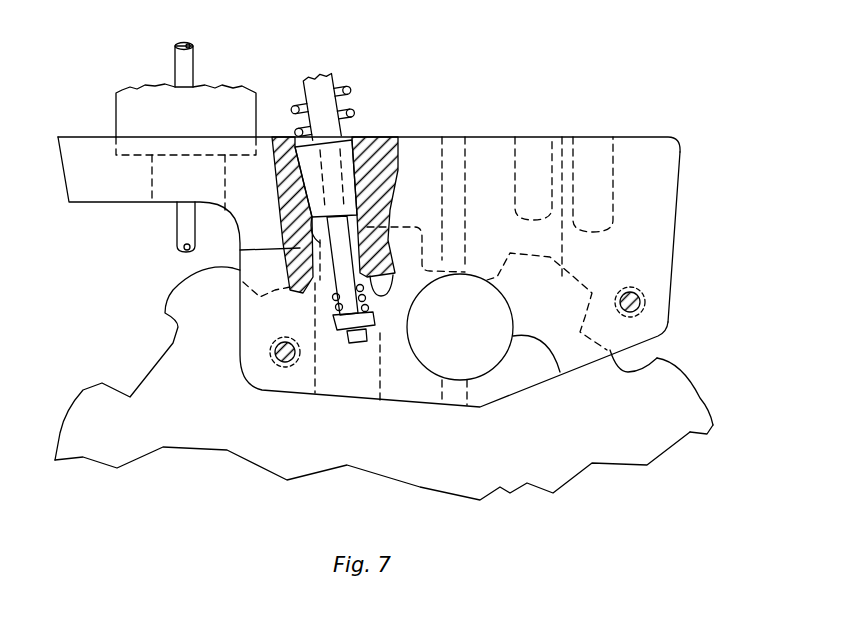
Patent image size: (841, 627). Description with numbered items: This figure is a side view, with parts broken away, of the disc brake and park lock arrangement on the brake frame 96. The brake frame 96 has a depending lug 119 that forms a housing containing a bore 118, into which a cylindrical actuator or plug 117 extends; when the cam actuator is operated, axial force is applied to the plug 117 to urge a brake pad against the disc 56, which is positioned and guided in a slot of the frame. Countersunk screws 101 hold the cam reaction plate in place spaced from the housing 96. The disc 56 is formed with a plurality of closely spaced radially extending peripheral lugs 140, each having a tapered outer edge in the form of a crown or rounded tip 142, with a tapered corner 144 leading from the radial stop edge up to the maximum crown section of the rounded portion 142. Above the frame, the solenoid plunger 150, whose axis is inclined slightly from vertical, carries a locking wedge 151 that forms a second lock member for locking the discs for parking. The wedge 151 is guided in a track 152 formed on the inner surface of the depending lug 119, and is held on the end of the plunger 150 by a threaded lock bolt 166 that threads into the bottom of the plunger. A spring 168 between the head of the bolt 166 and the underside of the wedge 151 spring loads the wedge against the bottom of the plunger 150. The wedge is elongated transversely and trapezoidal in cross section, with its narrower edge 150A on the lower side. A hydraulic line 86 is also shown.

The disc 56 is at (582, 443).
The hydraulic line 86 is at (173, 63).
The brake frame 96 is at (684, 232).
The countersunk screws 101 is at (286, 367).
The cylindrical actuator or plug 117 is at (475, 357).
The bore 118 is at (553, 353).
The depending lug 119 is at (657, 270).
The lugs 140 is at (712, 413).
The rounded tip 142 is at (702, 393).
The tapered corner 144 is at (657, 357).
The plunger 150 is at (335, 76).
The narrower edge 150A is at (240, 250).
The locking wedge 151 is at (353, 138).
The track 152 is at (355, 248).
The bolt 166 is at (318, 303).
The spring 168 is at (331, 314).